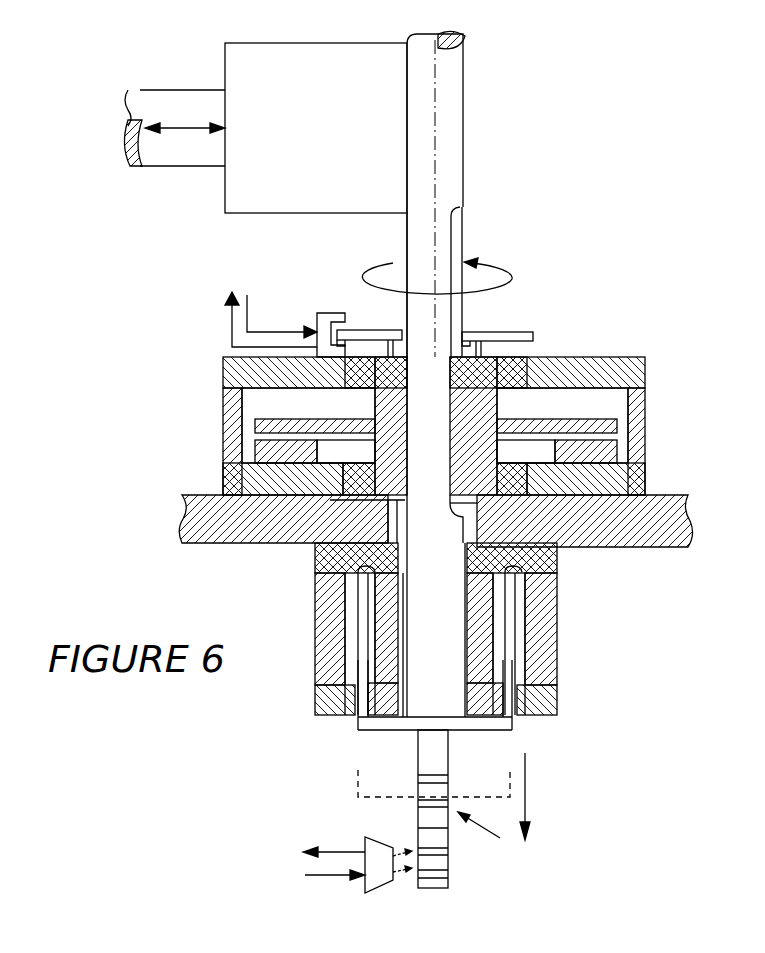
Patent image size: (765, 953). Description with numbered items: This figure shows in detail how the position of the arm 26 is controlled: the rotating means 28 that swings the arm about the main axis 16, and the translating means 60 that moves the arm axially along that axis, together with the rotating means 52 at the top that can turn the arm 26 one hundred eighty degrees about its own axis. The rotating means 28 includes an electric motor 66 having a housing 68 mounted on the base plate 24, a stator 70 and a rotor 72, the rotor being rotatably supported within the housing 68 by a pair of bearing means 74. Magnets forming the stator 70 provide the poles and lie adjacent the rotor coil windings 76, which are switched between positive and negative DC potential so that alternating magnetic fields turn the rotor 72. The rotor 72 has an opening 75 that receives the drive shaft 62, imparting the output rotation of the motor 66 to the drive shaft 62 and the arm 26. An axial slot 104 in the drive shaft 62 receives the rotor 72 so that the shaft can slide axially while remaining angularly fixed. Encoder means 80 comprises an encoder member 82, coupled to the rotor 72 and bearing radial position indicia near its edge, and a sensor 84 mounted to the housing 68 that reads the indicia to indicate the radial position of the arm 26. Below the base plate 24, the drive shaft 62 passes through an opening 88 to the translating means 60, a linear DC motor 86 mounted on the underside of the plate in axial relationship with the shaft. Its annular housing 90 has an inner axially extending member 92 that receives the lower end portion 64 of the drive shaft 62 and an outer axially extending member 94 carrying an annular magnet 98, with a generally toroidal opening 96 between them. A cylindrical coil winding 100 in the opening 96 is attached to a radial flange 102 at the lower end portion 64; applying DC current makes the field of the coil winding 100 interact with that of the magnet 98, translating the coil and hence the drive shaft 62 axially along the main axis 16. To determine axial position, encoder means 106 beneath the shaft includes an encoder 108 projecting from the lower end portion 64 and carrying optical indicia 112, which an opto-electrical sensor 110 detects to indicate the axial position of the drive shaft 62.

The main axis 16 is at (437, 118).
The base plate 24 is at (636, 549).
The arm 26 is at (185, 100).
The rotating means 28 is at (652, 382).
The rotating means 52 is at (310, 43).
The translating means 60 is at (558, 698).
The drive shaft 62 is at (407, 247).
The lower end portion 64 is at (428, 700).
The electric motor 66 is at (223, 375).
The housing 68 is at (223, 420).
The stator 70 is at (262, 448).
The rotor 72 is at (500, 405).
The bearing means 74 is at (513, 357).
The opening 75 is at (412, 385).
The rotor coil windings 76 is at (268, 420).
The encoder means 80 is at (294, 318).
The encoder member 82 is at (500, 330).
The sensor 84 is at (331, 313).
The linear DC motor 86 is at (315, 573).
The opening 88 is at (468, 520).
The annular housing 90 is at (315, 560).
The inner axially extending member 92 is at (480, 638).
The outer axially extending member 94 is at (328, 717).
The toroidal opening 96 is at (357, 720).
The annular magnet 98 is at (557, 648).
The cylindrical coil winding 100 is at (512, 605).
The radial flange 102 is at (380, 720).
The axial slot 104 is at (456, 232).
The encoder means 106 is at (495, 839).
The encoder 108 is at (444, 809).
The opto-electrical sensor 110 is at (384, 843).
The optical indicia 112 is at (440, 873).